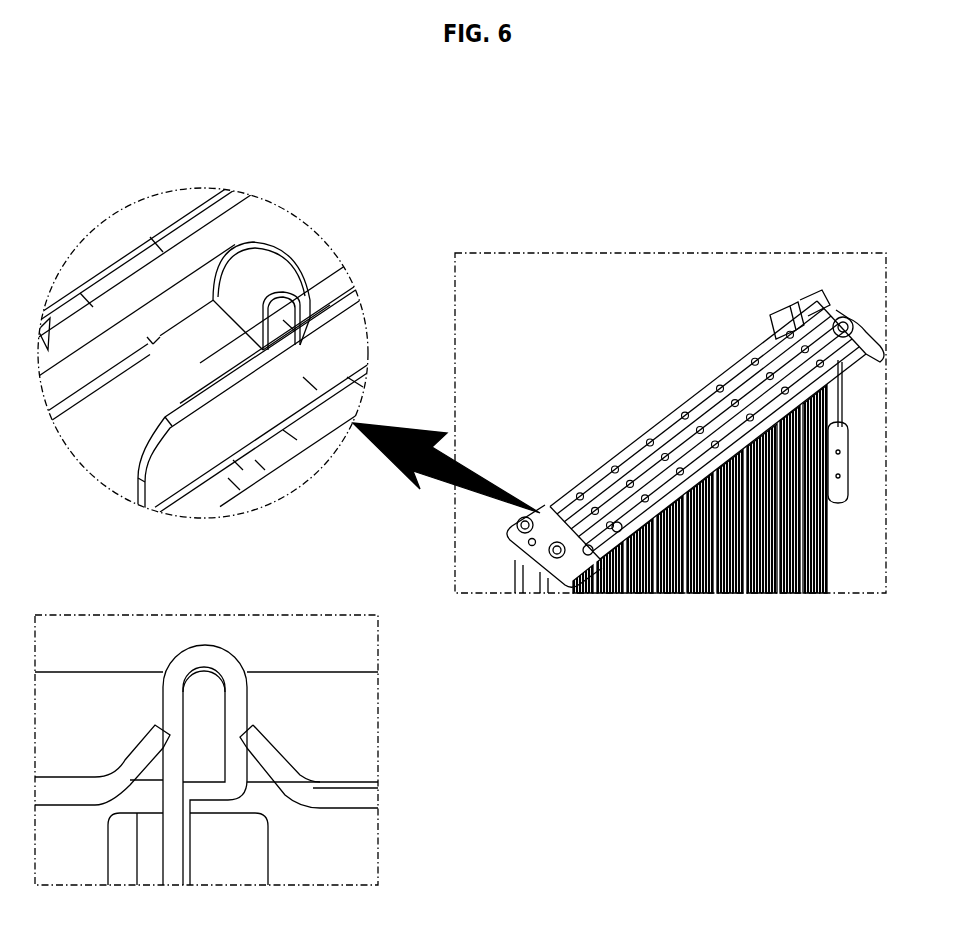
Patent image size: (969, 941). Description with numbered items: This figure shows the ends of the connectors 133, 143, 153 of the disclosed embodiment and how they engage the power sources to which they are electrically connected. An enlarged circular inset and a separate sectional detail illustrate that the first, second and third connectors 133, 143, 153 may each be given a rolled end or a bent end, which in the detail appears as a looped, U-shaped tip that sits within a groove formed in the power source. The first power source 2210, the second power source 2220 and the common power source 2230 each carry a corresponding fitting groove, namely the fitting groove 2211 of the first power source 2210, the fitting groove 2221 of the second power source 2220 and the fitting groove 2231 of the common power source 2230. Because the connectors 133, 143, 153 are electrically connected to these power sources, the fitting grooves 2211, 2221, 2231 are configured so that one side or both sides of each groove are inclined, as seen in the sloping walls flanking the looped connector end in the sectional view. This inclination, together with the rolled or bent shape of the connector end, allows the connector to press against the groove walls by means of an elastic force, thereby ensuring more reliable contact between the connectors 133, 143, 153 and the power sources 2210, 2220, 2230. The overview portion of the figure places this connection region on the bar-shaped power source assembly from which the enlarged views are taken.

The first connector 133 is at (366, 499).
The second connector 143 is at (366, 499).
The third connector 153 is at (257, 262).
The first power source 2210 is at (373, 349).
The second power source 2220 is at (373, 349).
The common power source 2230 is at (350, 390).
The fitting groove 2211 is at (316, 766).
The fitting groove 2221 is at (316, 766).
The fitting groove 2231 is at (280, 763).